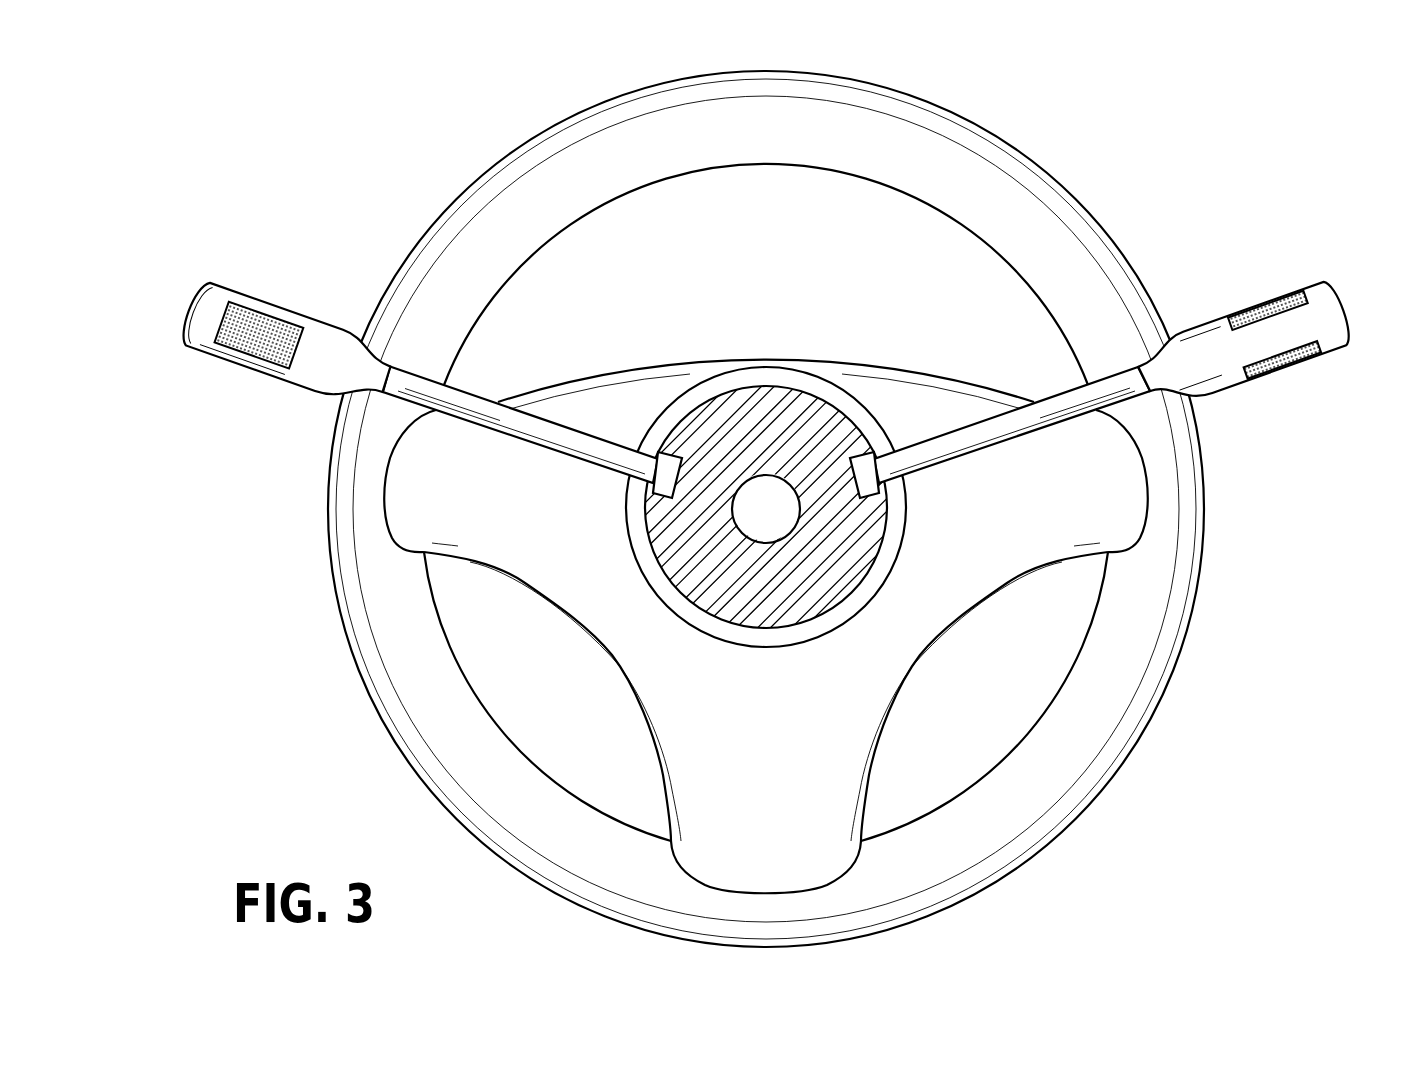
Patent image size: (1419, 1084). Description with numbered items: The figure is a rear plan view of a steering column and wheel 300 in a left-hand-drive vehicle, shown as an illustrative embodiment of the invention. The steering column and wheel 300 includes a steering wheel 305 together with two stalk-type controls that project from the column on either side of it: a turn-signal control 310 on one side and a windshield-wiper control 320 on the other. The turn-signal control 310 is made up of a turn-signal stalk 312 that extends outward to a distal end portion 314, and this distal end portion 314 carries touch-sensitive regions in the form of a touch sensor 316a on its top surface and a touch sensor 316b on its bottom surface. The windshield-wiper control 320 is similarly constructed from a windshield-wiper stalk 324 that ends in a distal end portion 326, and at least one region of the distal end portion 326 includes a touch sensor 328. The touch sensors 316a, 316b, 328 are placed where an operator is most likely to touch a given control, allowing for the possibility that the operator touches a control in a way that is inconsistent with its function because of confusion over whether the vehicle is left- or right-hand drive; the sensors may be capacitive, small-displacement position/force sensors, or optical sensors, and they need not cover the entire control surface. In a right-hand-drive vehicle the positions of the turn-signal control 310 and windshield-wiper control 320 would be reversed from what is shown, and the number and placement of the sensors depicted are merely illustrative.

The steering column and wheel 300 is at (761, 496).
The steering wheel 305 is at (1003, 180).
The turn-signal control 310 is at (1109, 330).
The turn-signal stalk 312 is at (1043, 413).
The distal end portion 314 is at (1250, 355).
The touch sensor 316a is at (1268, 310).
The touch sensor 316b is at (1283, 359).
The windshield-wiper control 320 is at (424, 339).
The windshield-wiper stalk 324 is at (537, 427).
The distal end portion 326 is at (288, 321).
The touch sensor 328 is at (259, 335).